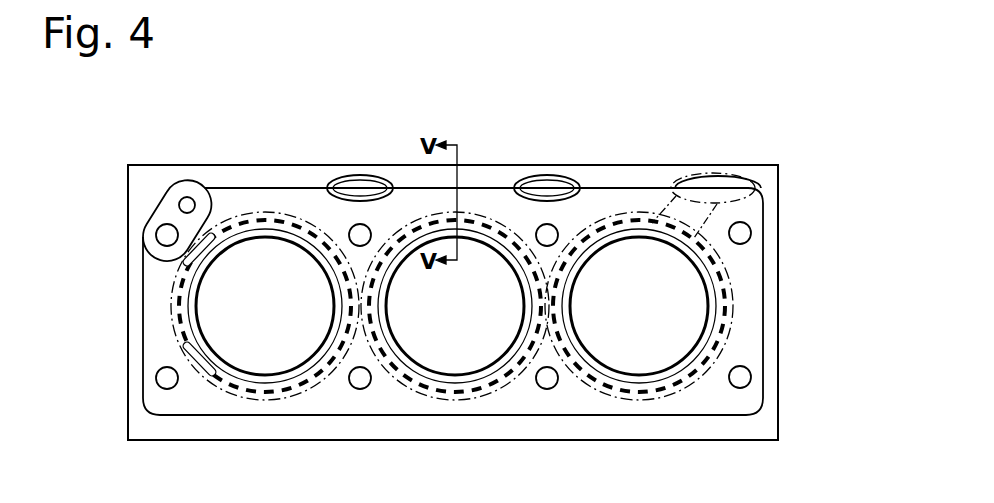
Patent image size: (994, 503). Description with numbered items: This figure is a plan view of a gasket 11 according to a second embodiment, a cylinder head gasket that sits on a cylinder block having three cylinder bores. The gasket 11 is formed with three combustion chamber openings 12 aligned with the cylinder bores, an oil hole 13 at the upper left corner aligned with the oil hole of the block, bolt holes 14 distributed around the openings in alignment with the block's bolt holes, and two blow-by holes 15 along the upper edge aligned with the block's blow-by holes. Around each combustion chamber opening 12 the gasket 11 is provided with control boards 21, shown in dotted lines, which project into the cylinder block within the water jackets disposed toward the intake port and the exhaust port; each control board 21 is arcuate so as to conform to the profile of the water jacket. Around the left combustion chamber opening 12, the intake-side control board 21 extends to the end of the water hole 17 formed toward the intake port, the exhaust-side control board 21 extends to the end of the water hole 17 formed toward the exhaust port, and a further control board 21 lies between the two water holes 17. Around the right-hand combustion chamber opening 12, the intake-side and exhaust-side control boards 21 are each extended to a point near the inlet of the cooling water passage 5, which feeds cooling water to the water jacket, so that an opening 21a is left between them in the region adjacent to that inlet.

The gasket 11 is at (272, 165).
The combustion chamber opening 12 is at (226, 313).
The oil hole 13 is at (187, 197).
The bolt hole 14 is at (156, 235).
The blow-by hole 15 is at (354, 193).
The water hole 17 is at (188, 264).
The control board 21 is at (178, 300).
The opening 21a is at (652, 222).
The cooling water passage 5 is at (723, 182).